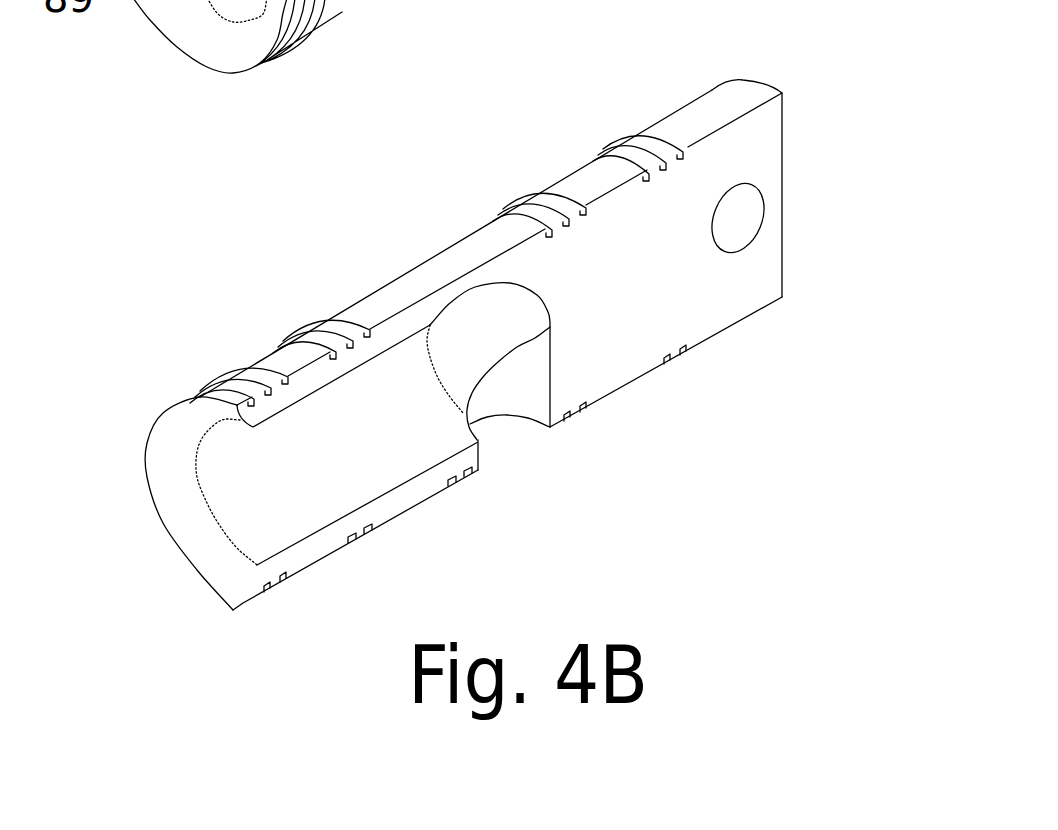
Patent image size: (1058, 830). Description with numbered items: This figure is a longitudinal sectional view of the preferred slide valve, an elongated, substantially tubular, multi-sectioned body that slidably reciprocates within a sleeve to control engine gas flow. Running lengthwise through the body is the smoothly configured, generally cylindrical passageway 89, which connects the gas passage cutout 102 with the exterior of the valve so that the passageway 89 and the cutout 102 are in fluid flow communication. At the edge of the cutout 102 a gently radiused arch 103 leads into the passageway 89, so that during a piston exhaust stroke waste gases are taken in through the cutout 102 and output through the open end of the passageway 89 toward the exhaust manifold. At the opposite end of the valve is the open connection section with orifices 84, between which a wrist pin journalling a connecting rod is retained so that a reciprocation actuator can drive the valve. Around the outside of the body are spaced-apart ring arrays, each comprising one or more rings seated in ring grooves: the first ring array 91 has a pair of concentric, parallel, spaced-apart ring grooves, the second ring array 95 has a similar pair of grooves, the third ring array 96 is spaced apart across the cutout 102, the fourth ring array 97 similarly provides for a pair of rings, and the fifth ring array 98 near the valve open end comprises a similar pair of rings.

The orifice 84 is at (758, 226).
The passageway 89 is at (222, 508).
The first ring array 91 is at (620, 127).
The second ring array 95 is at (518, 179).
The third ring array 96 is at (467, 497).
The fourth ring array 97 is at (296, 304).
The fifth ring array 98 is at (203, 361).
The gas passage cutout 102 is at (516, 451).
The radiused arch 103 is at (515, 376).